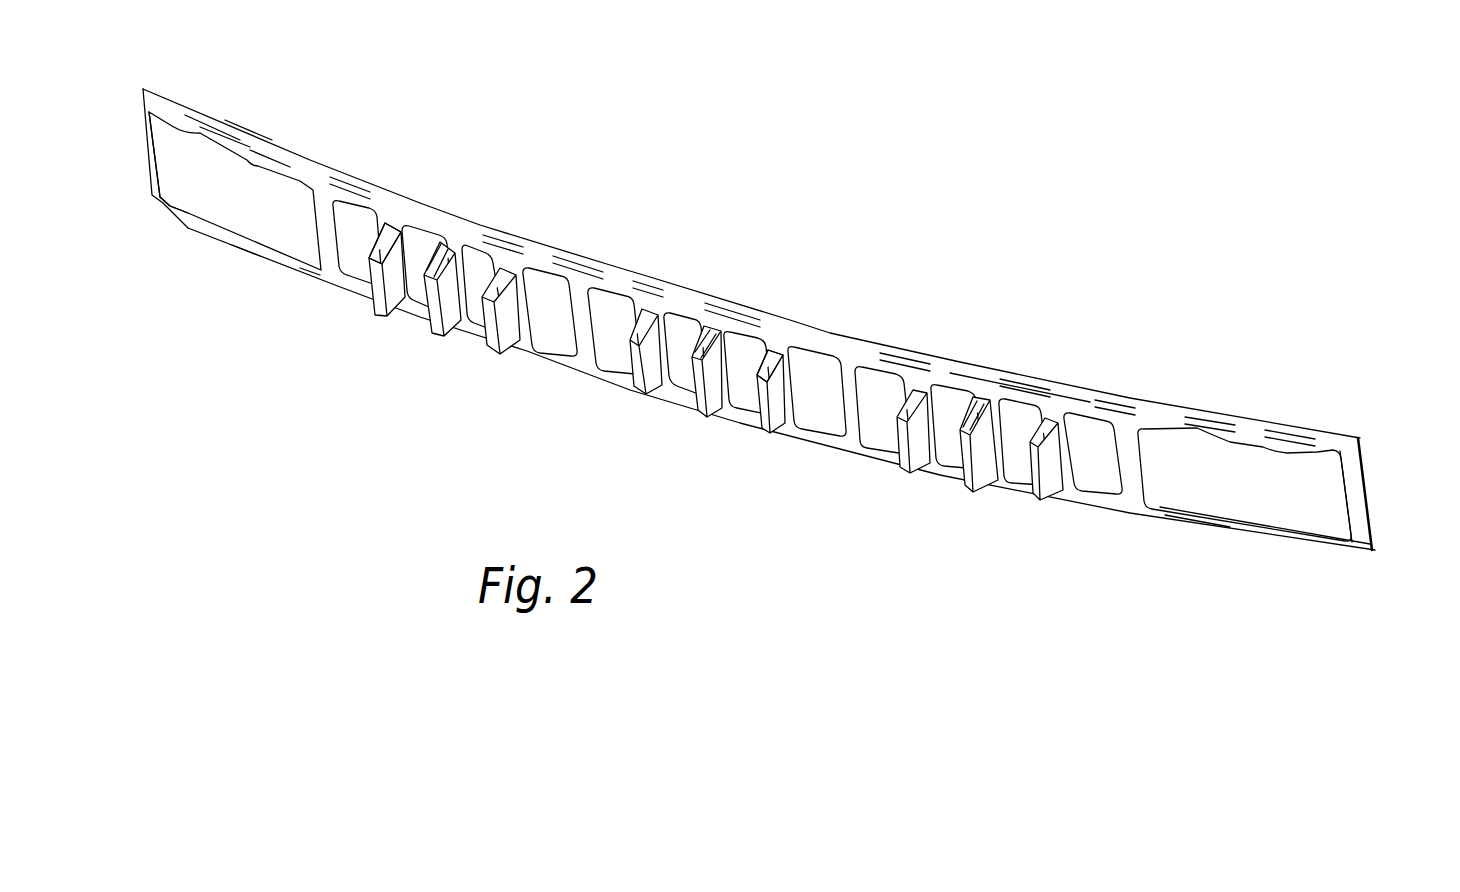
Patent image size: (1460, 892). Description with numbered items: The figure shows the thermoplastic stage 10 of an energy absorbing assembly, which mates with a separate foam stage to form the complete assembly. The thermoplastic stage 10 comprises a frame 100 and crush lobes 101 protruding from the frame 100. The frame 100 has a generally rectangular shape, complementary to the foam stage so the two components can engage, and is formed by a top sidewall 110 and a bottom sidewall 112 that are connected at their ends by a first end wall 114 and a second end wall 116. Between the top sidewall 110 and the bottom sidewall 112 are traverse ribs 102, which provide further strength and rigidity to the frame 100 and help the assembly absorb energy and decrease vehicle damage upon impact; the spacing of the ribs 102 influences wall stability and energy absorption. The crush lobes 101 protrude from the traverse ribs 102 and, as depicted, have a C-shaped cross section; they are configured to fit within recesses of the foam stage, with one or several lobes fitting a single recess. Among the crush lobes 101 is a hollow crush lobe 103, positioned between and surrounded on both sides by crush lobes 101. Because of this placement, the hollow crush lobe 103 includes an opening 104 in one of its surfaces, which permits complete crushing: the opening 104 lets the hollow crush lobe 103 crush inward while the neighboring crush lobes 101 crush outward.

The thermoplastic stage 10 is at (240, 273).
The frame 100 is at (1258, 422).
The crush lobes 101 is at (502, 328).
The traverse ribs 102 is at (393, 227).
The hollow crush lobe 103 is at (708, 377).
The opening 104 is at (983, 400).
The top sidewall 110 is at (1103, 397).
The bottom sidewall 112 is at (1132, 510).
The first end wall 114 is at (143, 150).
The second end wall 116 is at (1370, 492).